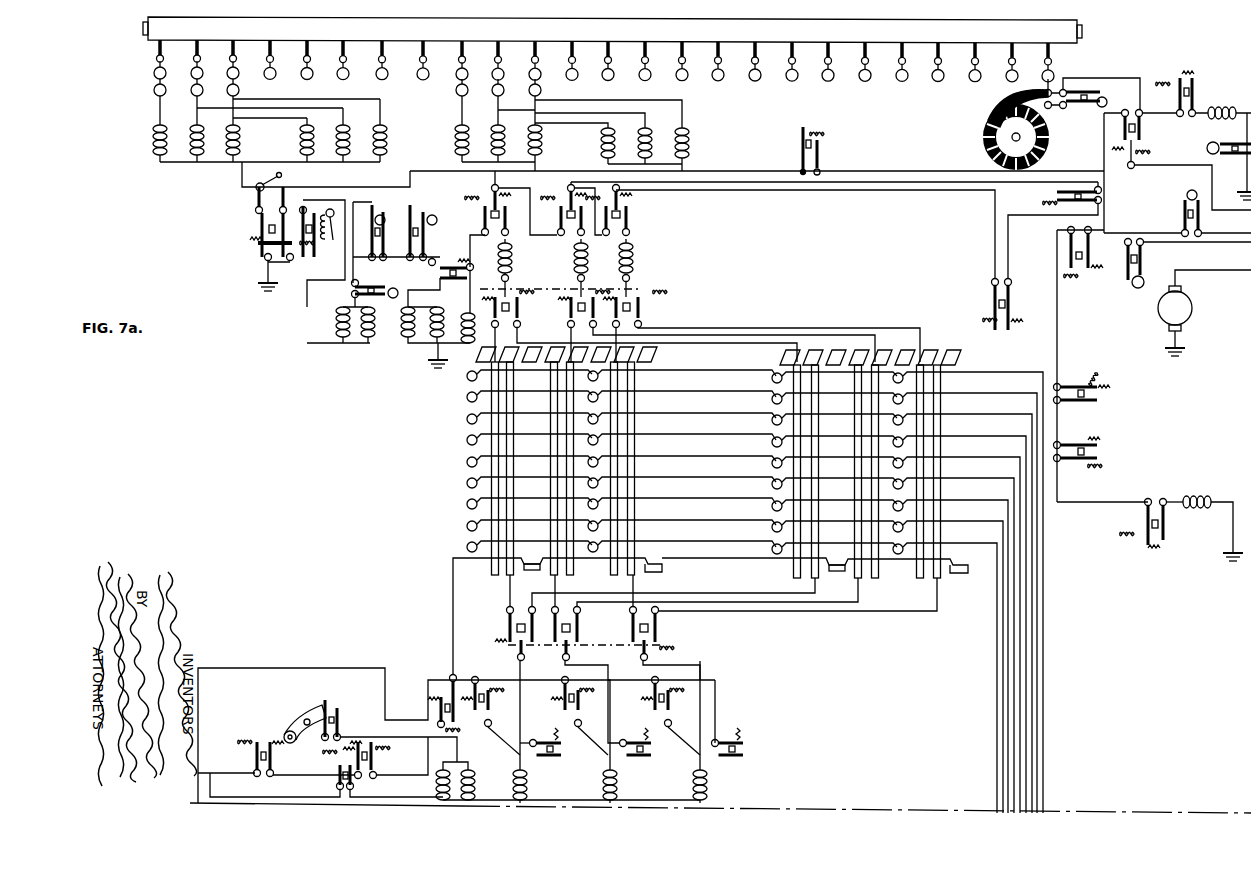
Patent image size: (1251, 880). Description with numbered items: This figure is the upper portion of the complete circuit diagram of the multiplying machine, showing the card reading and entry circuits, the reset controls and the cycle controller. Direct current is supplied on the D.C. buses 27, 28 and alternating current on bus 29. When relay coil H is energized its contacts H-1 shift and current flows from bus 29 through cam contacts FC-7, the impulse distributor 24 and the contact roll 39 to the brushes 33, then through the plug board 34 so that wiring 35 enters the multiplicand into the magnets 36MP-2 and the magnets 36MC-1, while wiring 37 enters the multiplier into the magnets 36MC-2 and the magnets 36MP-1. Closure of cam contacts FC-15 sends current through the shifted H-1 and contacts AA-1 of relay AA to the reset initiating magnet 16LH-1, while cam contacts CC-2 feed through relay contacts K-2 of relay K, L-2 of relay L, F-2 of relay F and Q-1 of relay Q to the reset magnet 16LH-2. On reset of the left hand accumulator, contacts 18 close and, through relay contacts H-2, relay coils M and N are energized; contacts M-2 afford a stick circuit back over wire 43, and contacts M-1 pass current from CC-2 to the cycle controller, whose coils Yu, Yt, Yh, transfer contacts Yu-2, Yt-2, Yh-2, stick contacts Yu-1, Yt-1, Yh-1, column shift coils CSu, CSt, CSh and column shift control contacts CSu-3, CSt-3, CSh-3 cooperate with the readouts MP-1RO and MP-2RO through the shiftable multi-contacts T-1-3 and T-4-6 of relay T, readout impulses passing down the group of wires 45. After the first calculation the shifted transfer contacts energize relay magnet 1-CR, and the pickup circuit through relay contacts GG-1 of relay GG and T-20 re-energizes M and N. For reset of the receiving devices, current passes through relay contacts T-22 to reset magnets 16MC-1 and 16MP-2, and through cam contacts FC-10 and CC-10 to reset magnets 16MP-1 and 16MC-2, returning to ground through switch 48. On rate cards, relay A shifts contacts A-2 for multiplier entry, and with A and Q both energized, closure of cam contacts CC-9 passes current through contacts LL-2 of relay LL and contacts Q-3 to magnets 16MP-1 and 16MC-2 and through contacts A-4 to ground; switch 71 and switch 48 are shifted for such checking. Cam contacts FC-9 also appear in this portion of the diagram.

The card transfer and contact roll 39 is at (1062, 42).
The brushes 33 is at (763, 54).
The plug board 34 is at (213, 80).
The wiring 35 is at (270, 100).
The wiring 37 is at (597, 112).
The accumulator magnets of MC-1 36MC-1 is at (155, 150).
The accumulator magnets of MC-2 36MC-2 is at (796, 146).
The accumulator magnets of MP-1 36MP-1 is at (455, 136).
The accumulator magnets of MP-2 36MP-2 is at (357, 128).
The relay Q is at (838, 127).
The relay contacts Q-1 is at (1168, 529).
The relay contacts Q-3 is at (822, 157).
The impulse distributor 24 is at (988, 150).
The switch 71 is at (283, 179).
The relay A is at (300, 258).
The relay contacts A-2 is at (258, 226).
The relay contacts A-4 is at (300, 225).
The switch 48 is at (323, 241).
The cam contacts FC-10 is at (430, 226).
The cam contacts FC-9 is at (378, 250).
The cam contacts FC-7 is at (1075, 110).
The cam contacts FC-15 is at (1213, 142).
The relay T is at (458, 292).
The relay contacts T-22 is at (434, 260).
The shiftable multi-contacts T-1 to 3 T-1-3 is at (640, 319).
The shiftable multi-contacts T-4 to 6 T-4-6 is at (640, 625).
The relay contacts T-20 is at (376, 775).
The cam contacts CC-10 is at (385, 298).
The cam contacts CC-2 is at (1183, 220).
The cam contacts CC-9 is at (1143, 262).
The reset magnet 16MP-1 is at (338, 322).
The reset magnet 16MC-2 is at (366, 340).
The reset magnet 16MP-2 is at (405, 340).
The reset magnet 16MC-1 is at (435, 340).
The relay magnet 1-CR is at (468, 347).
The MP-1 readout MP-1RO is at (466, 460).
The MP-2 readout MP-2RO is at (898, 350).
The group of wires 45 is at (1020, 740).
The Yh coil Yh is at (478, 190).
The Yt coil Yt is at (565, 190).
The Yu coil Yu is at (632, 195).
The Yh-1 stick contacts Yh-1 is at (545, 755).
The Yt-1 stick contacts Yt-1 is at (632, 755).
The Yu-1 stick contacts Yu-1 is at (725, 755).
The Yh-2 transfer contacts Yh-2 is at (497, 232).
The Yt-2 transfer contacts Yt-2 is at (576, 240).
The Yu-2 transfer contacts Yu-2 is at (620, 226).
The column shift relay coil CSh is at (478, 677).
The column shift relay coil CSt is at (569, 677).
The column shift relay coil CSu is at (634, 255).
The column shift control contacts CSh-3 is at (500, 745).
The column shift control contacts CSt-3 is at (582, 722).
The column shift control contacts CSu-3 is at (672, 722).
The relay coil AA is at (1160, 78).
The relay contacts AA-1 is at (1193, 84).
The reset initiating magnet 16LH-1 is at (1228, 103).
The reset magnet 16LH-2 is at (1212, 494).
The relay coil H is at (255, 735).
The relay contacts H-1 is at (1140, 129).
The relay contacts H-2 is at (272, 765).
The relay LL is at (1048, 206).
The relay contacts LL-2 is at (1085, 190).
The relay K is at (1076, 282).
The relay contacts K-2 is at (1068, 247).
The relay coil M is at (475, 786).
The relay contacts M-1 is at (992, 284).
The relay contacts M-2 is at (450, 690).
The L relay coil L is at (1097, 372).
The relay contacts L-2 is at (1062, 401).
The relay F is at (1100, 460).
The relay contacts F-2 is at (1062, 461).
The A.C. bus 29 is at (1250, 359).
The wire 43 is at (238, 668).
The reset contacts 18 is at (333, 708).
The D.C. bus 27 is at (222, 768).
The D.C. bus 28 is at (353, 799).
The relay GG is at (320, 753).
The relay contacts GG-1 is at (338, 788).
The relay coil N is at (440, 785).